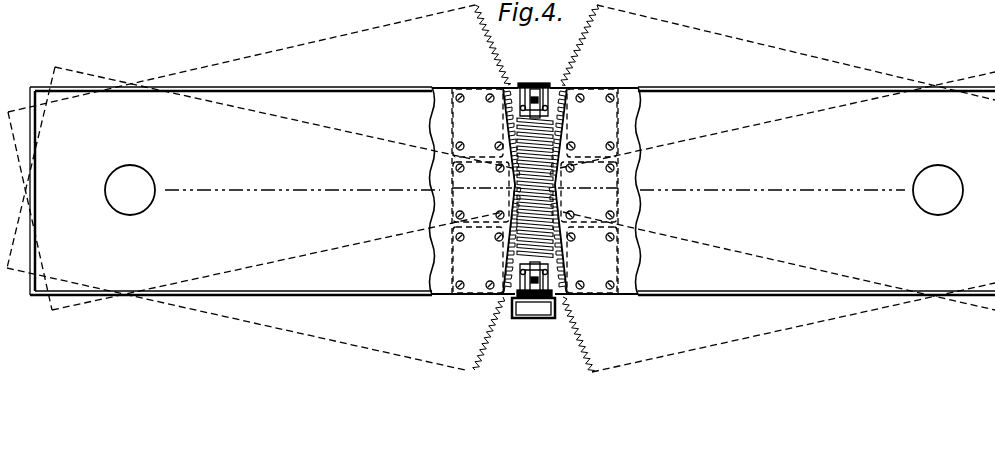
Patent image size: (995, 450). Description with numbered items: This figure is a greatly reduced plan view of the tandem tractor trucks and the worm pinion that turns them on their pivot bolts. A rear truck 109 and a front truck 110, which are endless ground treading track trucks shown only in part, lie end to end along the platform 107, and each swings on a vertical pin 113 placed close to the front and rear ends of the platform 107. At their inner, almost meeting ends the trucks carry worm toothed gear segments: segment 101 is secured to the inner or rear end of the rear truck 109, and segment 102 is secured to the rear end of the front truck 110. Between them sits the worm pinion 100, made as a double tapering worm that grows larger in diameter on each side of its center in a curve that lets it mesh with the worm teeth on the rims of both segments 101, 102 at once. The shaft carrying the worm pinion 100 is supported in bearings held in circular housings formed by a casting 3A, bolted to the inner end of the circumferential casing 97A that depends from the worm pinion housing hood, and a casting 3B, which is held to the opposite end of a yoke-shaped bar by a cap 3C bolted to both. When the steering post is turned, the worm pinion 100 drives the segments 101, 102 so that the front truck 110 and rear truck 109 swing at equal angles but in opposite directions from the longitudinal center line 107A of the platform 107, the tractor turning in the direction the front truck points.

The casting 3A is at (556, 274).
The casting 3B is at (556, 108).
The cap 3C is at (553, 84).
The circumferential casing 97A is at (533, 310).
The worm pinion 100 is at (513, 249).
The worm toothed gear segment 101 is at (511, 187).
The worm toothed gear segment 102 is at (559, 187).
The platform 107 is at (321, 90).
The longitudinal center line 107A is at (259, 190).
The rear truck 109 is at (272, 203).
The front truck 110 is at (772, 203).
The vertical axes pins 113 is at (534, 190).